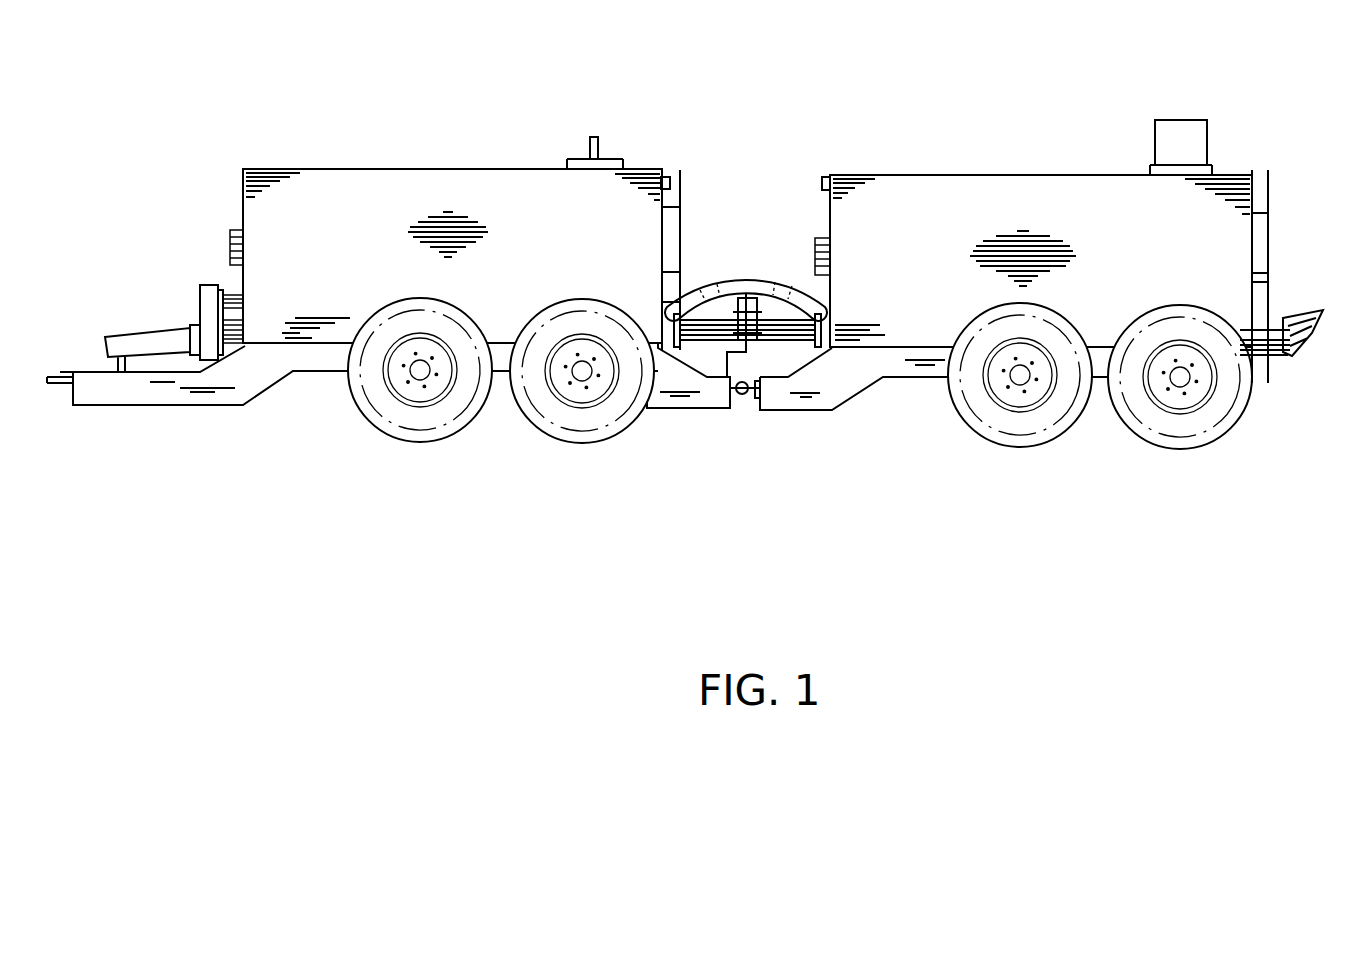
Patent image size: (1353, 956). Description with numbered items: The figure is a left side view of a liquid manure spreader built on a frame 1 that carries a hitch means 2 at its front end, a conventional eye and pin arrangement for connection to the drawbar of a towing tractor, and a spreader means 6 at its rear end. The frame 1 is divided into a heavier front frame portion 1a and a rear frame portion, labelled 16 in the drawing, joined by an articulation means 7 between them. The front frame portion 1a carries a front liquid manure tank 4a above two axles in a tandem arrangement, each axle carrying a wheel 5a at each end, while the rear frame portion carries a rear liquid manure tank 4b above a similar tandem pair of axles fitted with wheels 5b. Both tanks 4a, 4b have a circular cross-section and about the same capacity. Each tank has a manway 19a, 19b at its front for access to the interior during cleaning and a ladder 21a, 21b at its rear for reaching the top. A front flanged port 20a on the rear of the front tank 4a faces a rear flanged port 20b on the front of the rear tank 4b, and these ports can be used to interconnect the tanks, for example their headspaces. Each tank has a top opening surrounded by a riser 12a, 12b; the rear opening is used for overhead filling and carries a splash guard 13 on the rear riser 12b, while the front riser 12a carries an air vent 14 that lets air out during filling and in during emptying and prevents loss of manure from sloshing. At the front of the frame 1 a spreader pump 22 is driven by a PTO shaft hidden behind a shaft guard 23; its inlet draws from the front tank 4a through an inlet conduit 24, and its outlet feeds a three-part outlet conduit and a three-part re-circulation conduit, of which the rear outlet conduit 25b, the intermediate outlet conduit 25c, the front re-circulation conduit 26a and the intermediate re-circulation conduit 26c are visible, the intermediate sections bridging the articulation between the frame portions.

The frame 1 is at (885, 480).
The front frame portion 1a is at (692, 410).
The hitch means 2 is at (53, 380).
The front liquid manure tank 4a is at (348, 188).
The rear liquid manure tank 4b is at (968, 197).
The wheel 5a is at (418, 443).
The wheel 5b is at (1026, 448).
The spreader means 6 is at (1313, 297).
The articulation means 7 is at (744, 420).
The riser 12a is at (567, 165).
The riser 12b is at (1166, 168).
The splash guard 13 is at (1168, 138).
The air vent 14 is at (576, 140).
The rear frame section 16 is at (793, 410).
The manway 19a is at (237, 250).
The manway 19b is at (815, 262).
The front flanged port 20a is at (666, 182).
The rear flanged port 20b is at (829, 176).
The ladder 21a is at (680, 197).
The ladder 21b is at (1270, 208).
The spreader pump 22 is at (210, 323).
The shaft guard 23 is at (132, 345).
The inlet conduit 24 is at (205, 307).
The rear outlet conduit 25b is at (1258, 362).
The intermediate outlet conduit 25c is at (776, 307).
The front re-circulation conduit 26a is at (233, 297).
The intermediate re-circulation conduit 26c is at (703, 293).